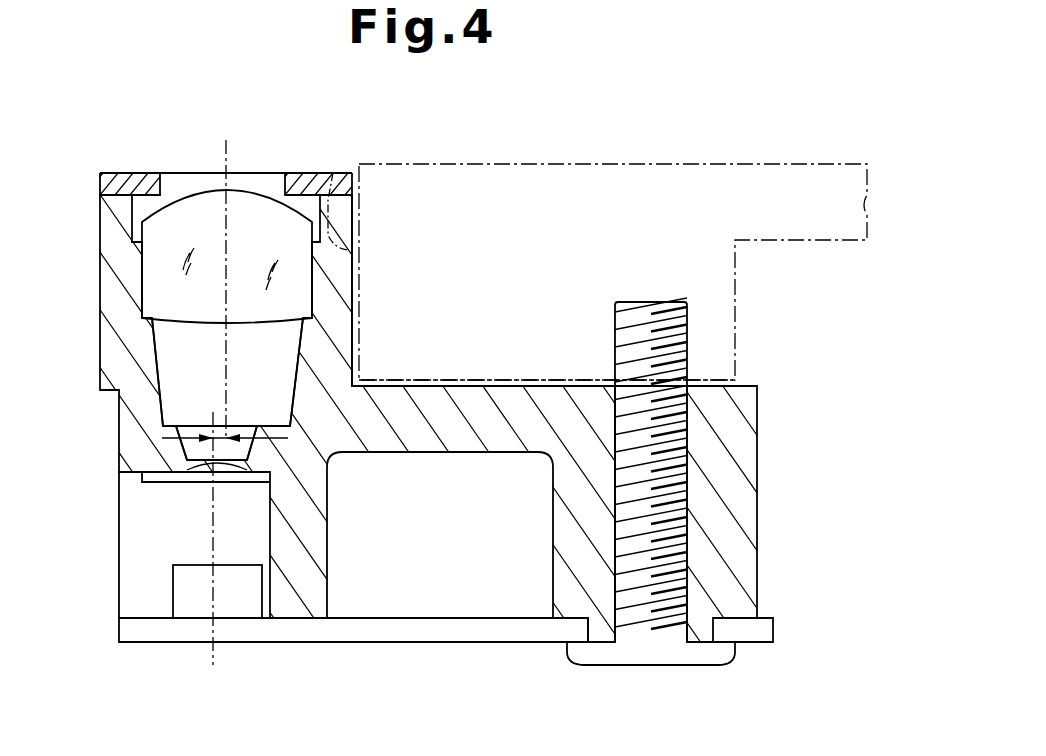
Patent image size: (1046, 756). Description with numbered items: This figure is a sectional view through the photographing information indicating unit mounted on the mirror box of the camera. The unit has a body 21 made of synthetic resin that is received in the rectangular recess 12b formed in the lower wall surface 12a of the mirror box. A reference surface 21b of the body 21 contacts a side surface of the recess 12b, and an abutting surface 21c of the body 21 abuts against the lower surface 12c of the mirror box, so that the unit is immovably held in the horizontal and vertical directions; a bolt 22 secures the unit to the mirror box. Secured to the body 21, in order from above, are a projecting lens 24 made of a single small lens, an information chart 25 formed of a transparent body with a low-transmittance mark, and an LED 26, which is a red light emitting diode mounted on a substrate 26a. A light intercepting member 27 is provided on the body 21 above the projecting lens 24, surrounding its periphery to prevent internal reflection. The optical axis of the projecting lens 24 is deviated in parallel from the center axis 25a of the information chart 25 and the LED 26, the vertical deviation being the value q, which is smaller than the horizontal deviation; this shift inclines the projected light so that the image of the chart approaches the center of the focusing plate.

The lower wall surface 12a is at (548, 173).
The rectangular recess 12b is at (333, 173).
The lower surface 12c is at (465, 382).
The body 21 is at (333, 337).
The reference surface 21b is at (357, 205).
The abutting surface 21c is at (510, 383).
The bolt 22 is at (630, 628).
The projecting lens 24 is at (167, 273).
The information chart 25 is at (168, 478).
The center axis 25a is at (212, 414).
The LED 26 is at (193, 610).
The substrate 26a is at (390, 632).
The light intercepting member 27 is at (133, 173).
The value of deviation in the vertical direction q is at (223, 440).